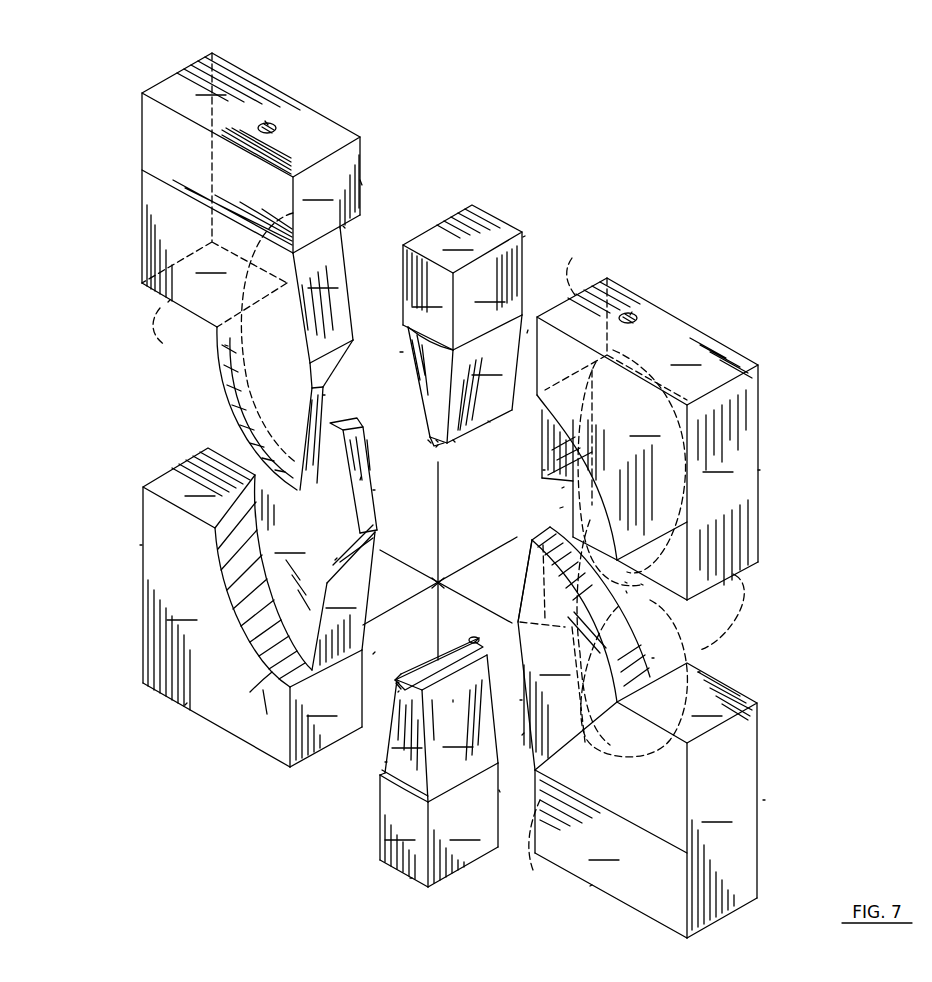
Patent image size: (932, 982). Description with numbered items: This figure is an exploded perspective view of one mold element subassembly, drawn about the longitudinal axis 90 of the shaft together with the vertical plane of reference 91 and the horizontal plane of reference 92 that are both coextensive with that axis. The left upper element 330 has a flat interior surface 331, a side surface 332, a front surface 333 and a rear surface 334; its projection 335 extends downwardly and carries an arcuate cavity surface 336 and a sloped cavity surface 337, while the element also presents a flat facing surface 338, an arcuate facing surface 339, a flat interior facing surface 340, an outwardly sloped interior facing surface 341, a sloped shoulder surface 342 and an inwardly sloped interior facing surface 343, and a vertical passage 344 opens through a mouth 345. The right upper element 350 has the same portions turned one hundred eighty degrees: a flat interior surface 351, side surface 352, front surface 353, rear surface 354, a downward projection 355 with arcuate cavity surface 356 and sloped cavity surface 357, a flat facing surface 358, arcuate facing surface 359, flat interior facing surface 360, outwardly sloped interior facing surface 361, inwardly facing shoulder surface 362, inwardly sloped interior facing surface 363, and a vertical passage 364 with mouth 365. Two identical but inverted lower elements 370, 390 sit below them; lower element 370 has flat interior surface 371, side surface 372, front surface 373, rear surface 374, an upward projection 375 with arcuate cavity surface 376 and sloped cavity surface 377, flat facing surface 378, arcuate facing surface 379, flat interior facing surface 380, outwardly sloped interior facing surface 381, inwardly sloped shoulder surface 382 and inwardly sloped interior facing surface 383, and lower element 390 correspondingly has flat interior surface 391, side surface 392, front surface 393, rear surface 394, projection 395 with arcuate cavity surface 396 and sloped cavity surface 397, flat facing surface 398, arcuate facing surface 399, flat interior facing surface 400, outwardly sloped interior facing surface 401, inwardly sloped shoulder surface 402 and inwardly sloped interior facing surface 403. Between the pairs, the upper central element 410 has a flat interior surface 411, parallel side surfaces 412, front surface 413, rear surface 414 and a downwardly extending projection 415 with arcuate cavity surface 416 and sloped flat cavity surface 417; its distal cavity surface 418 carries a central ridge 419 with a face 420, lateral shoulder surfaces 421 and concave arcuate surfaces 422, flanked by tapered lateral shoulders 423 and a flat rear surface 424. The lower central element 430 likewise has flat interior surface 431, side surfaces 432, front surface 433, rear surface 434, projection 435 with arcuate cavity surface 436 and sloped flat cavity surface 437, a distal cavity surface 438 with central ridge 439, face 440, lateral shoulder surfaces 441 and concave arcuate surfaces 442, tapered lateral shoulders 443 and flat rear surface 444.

The longitudinal axis 90 is at (263, 702).
The vertical plane of reference 91 is at (440, 491).
The horizontal plane of reference 92 is at (385, 552).
The left upper element 330 is at (228, 271).
The flat interior surface 331 is at (251, 115).
The side surface 332 is at (140, 207).
The front surface 333 is at (214, 190).
The rear surface 334 is at (362, 185).
The projection 335 is at (243, 372).
The arcuate cavity surface 336 is at (345, 228).
The sloped cavity surface 337 is at (325, 395).
The flat facing surface 338 is at (168, 302).
The arcuate facing surface 339 is at (225, 345).
The flat interior facing surface 340 is at (326, 195).
The outwardly sloped interior facing surface 341 is at (323, 295).
The sloped shoulder surface 342 is at (316, 370).
The inwardly sloped interior facing surface 343 is at (312, 410).
The vertical passage 344 is at (277, 125).
The mouth 345 is at (268, 122).
The right upper element 350 is at (665, 420).
The flat interior surface 351 is at (647, 341).
The side surface 352 is at (722, 482).
The front surface 353 is at (612, 458).
The rear surface 354 is at (760, 470).
The projection 355 is at (627, 583).
The arcuate cavity surface 356 is at (543, 470).
The sloped cavity surface 357 is at (627, 593).
The flat facing surface 358 is at (735, 575).
The arcuate facing surface 359 is at (643, 585).
The flat interior facing surface 360 is at (580, 267).
The outwardly sloped interior facing surface 361 is at (545, 445).
The inwardly facing shoulder surface 362 is at (562, 488).
The inwardly sloped interior facing surface 363 is at (560, 508).
The vertical passage 364 is at (640, 316).
The mouth 365 is at (632, 312).
The right lower element 370 is at (224, 578).
The flat interior surface 371 is at (185, 705).
The side surface 372 is at (140, 545).
The front surface 373 is at (216, 627).
The rear surface 374 is at (375, 652).
The projection 375 is at (375, 490).
The arcuate cavity surface 376 is at (258, 622).
The sloped cavity surface 377 is at (283, 572).
The flat facing surface 378 is at (199, 488).
The arcuate facing surface 379 is at (335, 424).
The flat interior facing surface 380 is at (326, 708).
The outwardly sloped interior facing surface 381 is at (343, 597).
The inwardly sloped shoulder surface 382 is at (335, 560).
The inwardly sloped interior facing surface 383 is at (360, 480).
The right lower element 390 is at (667, 729).
The flat interior surface 391 is at (590, 886).
The side surface 392 is at (722, 820).
The front surface 393 is at (611, 820).
The rear surface 394 is at (765, 800).
The projection 395 is at (584, 648).
The arcuate cavity surface 396 is at (700, 672).
The sloped cavity surface 397 is at (652, 658).
The flat facing surface 398 is at (687, 703).
The arcuate facing surface 399 is at (577, 643).
The flat interior facing surface 400 is at (533, 845).
The outwardly sloped interior facing surface 401 is at (522, 735).
The inwardly sloped shoulder surface 402 is at (453, 700).
The inwardly sloped interior facing surface 403 is at (527, 568).
The upper central element 410 is at (470, 321).
The flat interior surface 411 is at (462, 239).
The side surfaces 412 is at (445, 262).
The front surface 413 is at (428, 297).
The rear surface 414 is at (525, 236).
The projection 415 is at (400, 352).
The arcuate cavity surface 416 is at (428, 365).
The sloped flat cavity surface 417 is at (470, 420).
The distal cavity surface 418 is at (455, 442).
The central ridge 419 is at (428, 442).
The face 420 is at (436, 447).
The lateral shoulder surfaces 421 is at (430, 438).
The concave arcuate surfaces 422 is at (436, 440).
The tapered lateral shoulders 423 is at (408, 340).
The flat rear surface 424 is at (528, 330).
The lower central element 430 is at (406, 757).
The flat interior surface 431 is at (410, 878).
The side surfaces 432 is at (378, 800).
The front surface 433 is at (404, 831).
The rear surface 434 is at (500, 792).
The projection 435 is at (385, 762).
The arcuate cavity surface 436 is at (420, 792).
The sloped flat cavity surface 437 is at (406, 741).
The distal cavity surface 438 is at (437, 665).
The central ridge 439 is at (398, 692).
The face 440 is at (478, 640).
The lateral shoulder surfaces 441 is at (398, 682).
The concave arcuate surfaces 442 is at (405, 688).
The tapered lateral shoulders 443 is at (385, 735).
The flat rear surface 444 is at (522, 700).